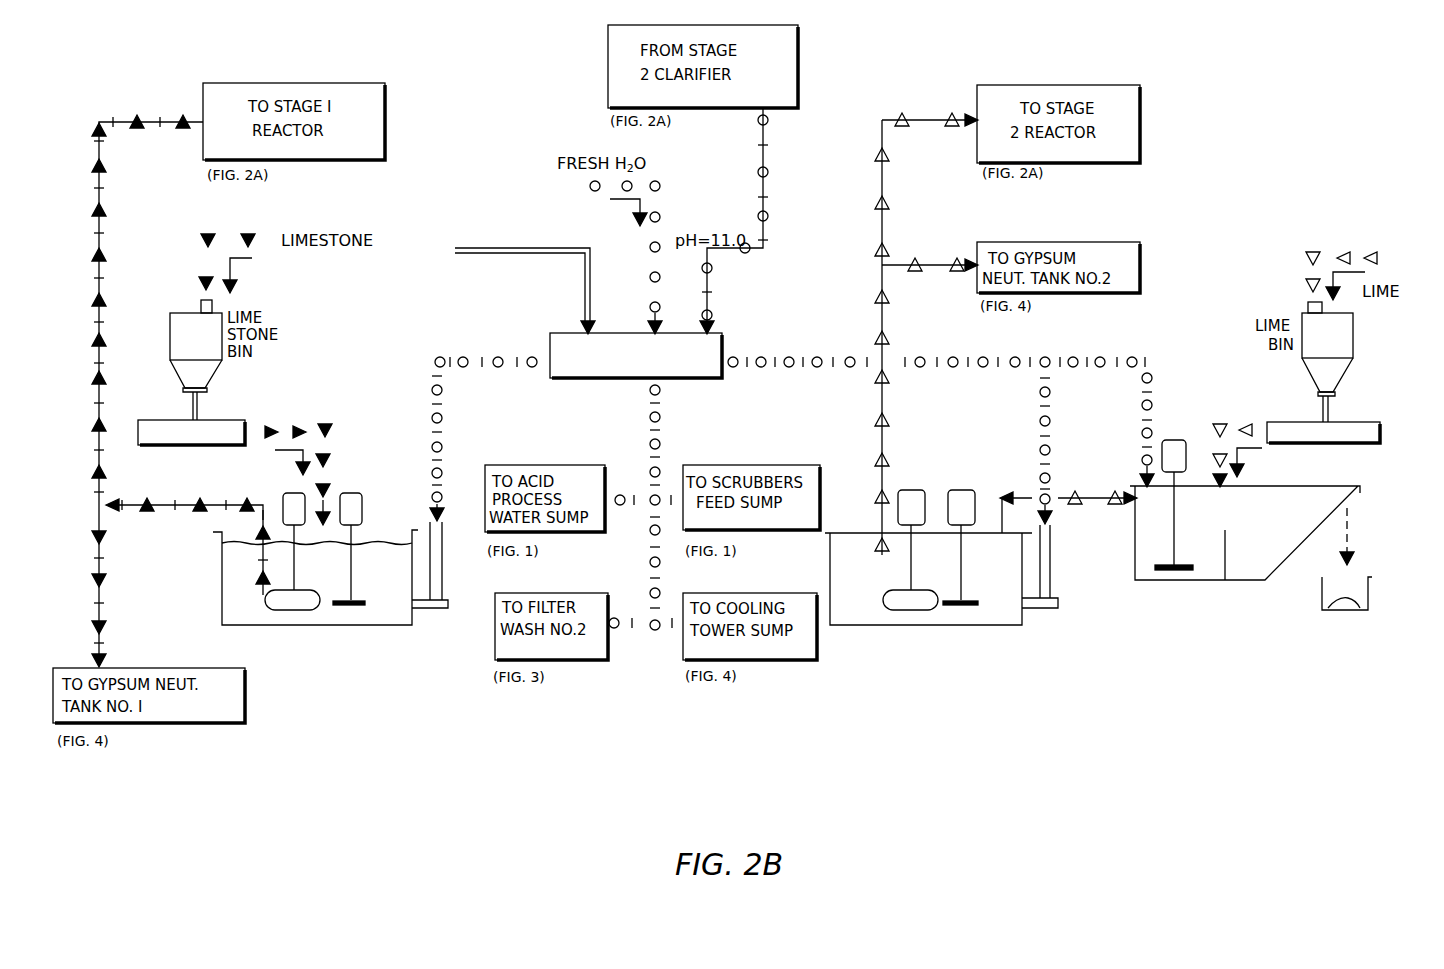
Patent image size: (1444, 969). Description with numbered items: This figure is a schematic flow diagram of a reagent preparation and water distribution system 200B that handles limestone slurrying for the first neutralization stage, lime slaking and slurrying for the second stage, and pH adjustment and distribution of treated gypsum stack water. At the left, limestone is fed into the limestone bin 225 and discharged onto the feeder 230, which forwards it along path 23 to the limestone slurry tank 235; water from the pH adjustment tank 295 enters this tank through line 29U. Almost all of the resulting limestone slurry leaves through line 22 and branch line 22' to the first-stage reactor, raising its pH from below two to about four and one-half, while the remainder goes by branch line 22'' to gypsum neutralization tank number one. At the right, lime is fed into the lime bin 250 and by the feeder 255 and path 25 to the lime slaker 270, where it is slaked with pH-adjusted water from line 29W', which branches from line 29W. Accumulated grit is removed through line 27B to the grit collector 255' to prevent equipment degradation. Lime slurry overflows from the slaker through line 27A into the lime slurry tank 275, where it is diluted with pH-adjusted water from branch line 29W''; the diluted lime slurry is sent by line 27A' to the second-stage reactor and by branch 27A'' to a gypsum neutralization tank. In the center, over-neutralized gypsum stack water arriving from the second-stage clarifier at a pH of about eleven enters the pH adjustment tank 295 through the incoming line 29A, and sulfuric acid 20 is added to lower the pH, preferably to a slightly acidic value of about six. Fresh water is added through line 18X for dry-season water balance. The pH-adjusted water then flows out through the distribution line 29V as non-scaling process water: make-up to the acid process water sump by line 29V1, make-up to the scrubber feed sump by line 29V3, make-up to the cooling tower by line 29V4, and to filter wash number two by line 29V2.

The fresh water line 18X is at (660, 190).
The sulfuric acid supply line 20 is at (578, 256).
The limestone slurry line 22 is at (177, 546).
The branch line 22' is at (147, 310).
The branch line 22'' is at (76, 586).
The path 23 is at (325, 478).
The path 25 is at (1244, 426).
The line 27A is at (1006, 337).
The line 27A' is at (909, 274).
The branch 27A'' is at (930, 243).
The line 27B is at (1348, 524).
The pH 11.0 clarified water line 29A is at (712, 276).
The line 29U is at (439, 355).
The pH adjusted water distribution line 29V is at (646, 419).
The line 29V1 is at (633, 492).
The line 29V2 is at (669, 493).
The line 29V3 is at (620, 616).
The line 29V4 is at (668, 617).
The line 29W is at (936, 343).
The line 29W' is at (1117, 430).
The branch line 29W'' is at (1008, 451).
The neutralization reagent preparation system 200B is at (1160, 292).
The limestone bin 225 is at (222, 362).
The feeder 230 is at (248, 432).
The limestone slurry tank 235 is at (222, 617).
The lime bin 250 is at (1353, 341).
The feeder 255 is at (1323, 447).
The grit collector 255' is at (1371, 607).
The lime slaker 270 is at (1267, 582).
The lime slurry tank 275 is at (1025, 619).
The pH adjustment tank 295 is at (722, 338).